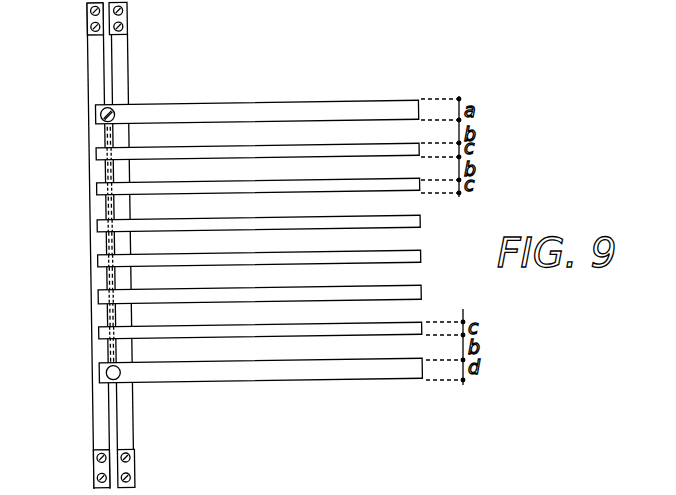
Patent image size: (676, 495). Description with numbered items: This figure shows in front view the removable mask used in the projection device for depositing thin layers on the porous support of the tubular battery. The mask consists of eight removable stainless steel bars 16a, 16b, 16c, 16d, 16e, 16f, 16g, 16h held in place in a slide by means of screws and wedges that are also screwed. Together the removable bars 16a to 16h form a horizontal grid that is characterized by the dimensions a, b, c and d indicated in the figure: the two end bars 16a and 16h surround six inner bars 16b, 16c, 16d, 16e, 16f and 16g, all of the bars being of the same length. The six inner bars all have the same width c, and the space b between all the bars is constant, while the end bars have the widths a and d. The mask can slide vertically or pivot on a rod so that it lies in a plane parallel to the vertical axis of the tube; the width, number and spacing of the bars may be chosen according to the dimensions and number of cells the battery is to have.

The removable bar 16a is at (96, 118).
The removable bar 16b is at (96, 158).
The removable bar 16c is at (96, 195).
The removable bar 16d is at (96, 230).
The removable bar 16e is at (96, 266).
The removable bar 16f is at (96, 300).
The removable bar 16g is at (96, 336).
The removable bar 16h is at (96, 376).